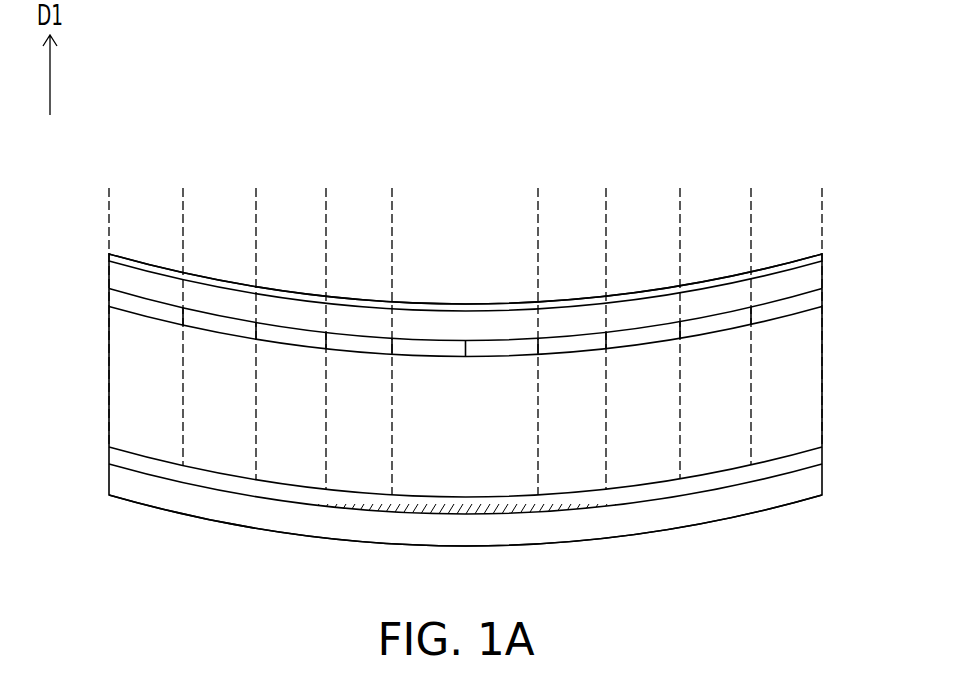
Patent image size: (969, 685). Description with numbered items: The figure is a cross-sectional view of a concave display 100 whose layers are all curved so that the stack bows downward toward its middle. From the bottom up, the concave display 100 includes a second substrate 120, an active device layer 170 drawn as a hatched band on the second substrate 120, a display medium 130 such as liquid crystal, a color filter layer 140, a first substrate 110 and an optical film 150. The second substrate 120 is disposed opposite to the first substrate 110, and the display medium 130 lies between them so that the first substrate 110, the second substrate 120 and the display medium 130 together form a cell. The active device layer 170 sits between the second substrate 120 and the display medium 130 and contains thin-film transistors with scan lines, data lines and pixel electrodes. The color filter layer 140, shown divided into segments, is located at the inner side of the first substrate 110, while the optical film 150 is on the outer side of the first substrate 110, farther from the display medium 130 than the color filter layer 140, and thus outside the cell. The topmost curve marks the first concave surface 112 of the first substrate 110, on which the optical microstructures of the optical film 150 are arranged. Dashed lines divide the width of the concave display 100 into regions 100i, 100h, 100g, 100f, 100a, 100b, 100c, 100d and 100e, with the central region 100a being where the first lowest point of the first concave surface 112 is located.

The concave display 100 is at (870, 590).
The region 100a is at (392, 196).
The region 100b is at (538, 196).
The region 100c is at (606, 196).
The region 100d is at (680, 196).
The edge region 100e is at (751, 196).
The region 100f is at (326, 196).
The region 100g is at (256, 196).
The region 100h is at (183, 196).
The edge region 100i is at (109, 196).
The first substrate 110 is at (807, 284).
The first concave surface 112 is at (797, 249).
The second substrate 120 is at (800, 487).
The display medium 130 is at (797, 394).
The color filter layer 140 is at (805, 306).
The optical film 150 is at (807, 264).
The active device layer 170 is at (812, 462).